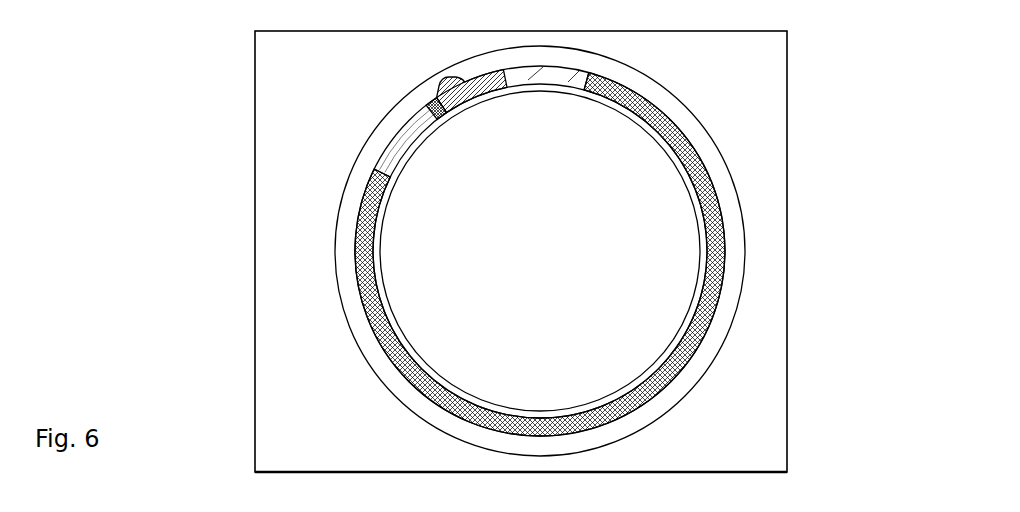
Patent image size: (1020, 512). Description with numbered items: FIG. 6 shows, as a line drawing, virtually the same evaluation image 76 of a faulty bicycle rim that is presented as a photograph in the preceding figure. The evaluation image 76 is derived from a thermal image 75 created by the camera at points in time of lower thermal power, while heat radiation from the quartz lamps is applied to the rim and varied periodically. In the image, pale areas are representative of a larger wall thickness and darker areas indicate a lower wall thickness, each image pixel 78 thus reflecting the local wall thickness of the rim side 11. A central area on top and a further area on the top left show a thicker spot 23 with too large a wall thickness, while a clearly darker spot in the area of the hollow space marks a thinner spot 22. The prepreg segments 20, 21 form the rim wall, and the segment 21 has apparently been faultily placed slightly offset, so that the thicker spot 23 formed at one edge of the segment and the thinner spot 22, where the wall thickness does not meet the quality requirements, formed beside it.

The rim side 11 is at (722, 220).
The segment 20 is at (466, 100).
The segment 21 is at (403, 138).
The thinner spot 22 is at (432, 102).
The thicker spot 23 is at (561, 78).
The thermal image 75 is at (800, 91).
The evaluation image 76 is at (737, 63).
The image pixel 78 is at (705, 318).